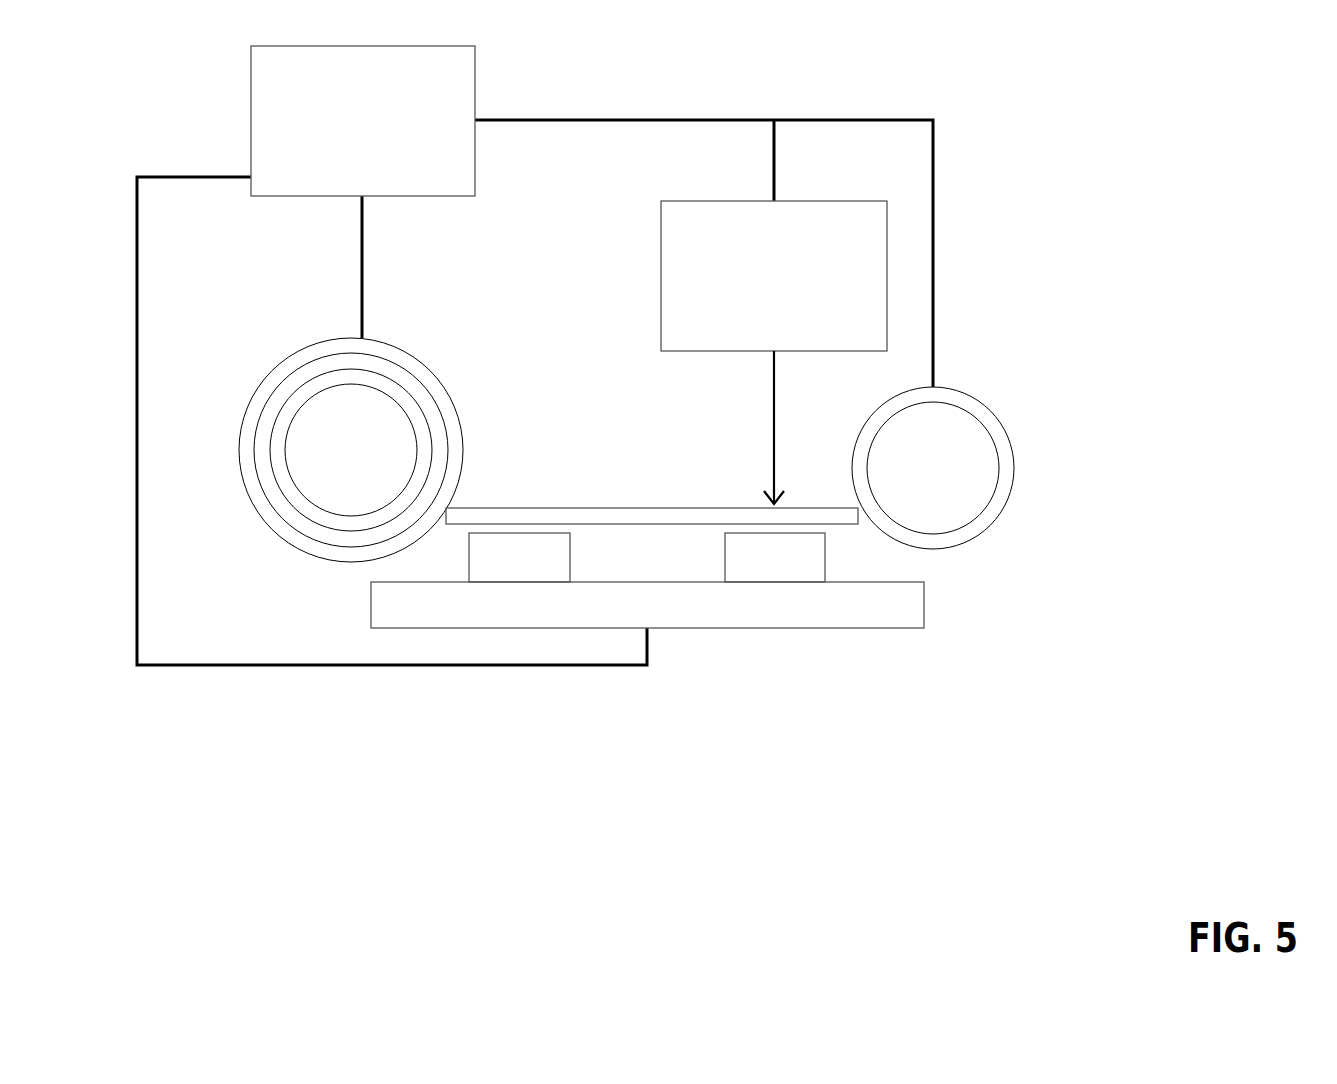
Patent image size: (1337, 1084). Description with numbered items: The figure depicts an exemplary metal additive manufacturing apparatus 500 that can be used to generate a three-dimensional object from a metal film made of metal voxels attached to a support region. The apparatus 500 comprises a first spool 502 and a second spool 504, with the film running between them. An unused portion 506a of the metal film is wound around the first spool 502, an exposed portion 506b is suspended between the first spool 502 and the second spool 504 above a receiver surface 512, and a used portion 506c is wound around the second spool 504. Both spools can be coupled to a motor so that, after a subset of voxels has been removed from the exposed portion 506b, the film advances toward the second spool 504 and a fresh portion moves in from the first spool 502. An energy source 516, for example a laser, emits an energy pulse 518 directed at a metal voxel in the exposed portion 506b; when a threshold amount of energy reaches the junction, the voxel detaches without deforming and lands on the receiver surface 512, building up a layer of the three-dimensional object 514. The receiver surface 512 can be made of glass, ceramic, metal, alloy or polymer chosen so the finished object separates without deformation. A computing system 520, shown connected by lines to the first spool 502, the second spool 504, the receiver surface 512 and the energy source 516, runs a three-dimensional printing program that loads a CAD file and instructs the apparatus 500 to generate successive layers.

The apparatus 500 is at (1074, 90).
The first spool 502 is at (392, 497).
The second spool 504 is at (992, 497).
The unused portion of the metal film 506a is at (308, 347).
The exposed portion of the metal film 506b is at (615, 507).
The used portion of the metal film 506c is at (1012, 477).
The receiver surface 512 is at (857, 626).
The layer of the three-dimensional object 514 is at (725, 557).
The energy source 516 is at (747, 201).
The energy pulse 518 is at (773, 447).
The computing system 520 is at (251, 130).